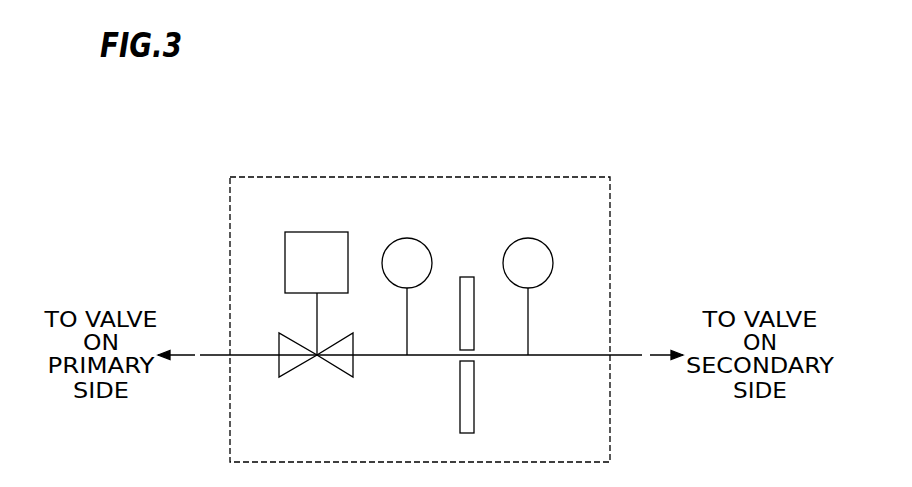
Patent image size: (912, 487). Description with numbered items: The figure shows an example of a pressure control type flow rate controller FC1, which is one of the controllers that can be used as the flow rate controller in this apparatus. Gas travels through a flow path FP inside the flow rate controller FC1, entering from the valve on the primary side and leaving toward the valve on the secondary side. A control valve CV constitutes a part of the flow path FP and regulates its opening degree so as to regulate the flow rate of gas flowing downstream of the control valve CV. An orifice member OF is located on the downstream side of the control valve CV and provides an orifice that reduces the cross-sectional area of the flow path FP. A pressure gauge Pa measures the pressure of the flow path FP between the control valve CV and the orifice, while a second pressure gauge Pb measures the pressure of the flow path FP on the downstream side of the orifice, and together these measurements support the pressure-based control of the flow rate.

The flow rate controller FC1 is at (585, 177).
The flow path FP is at (575, 355).
The control valve CV is at (300, 369).
The pressure gauge Pa is at (422, 243).
The pressure gauge Pb is at (545, 243).
The orifice member OF is at (474, 414).